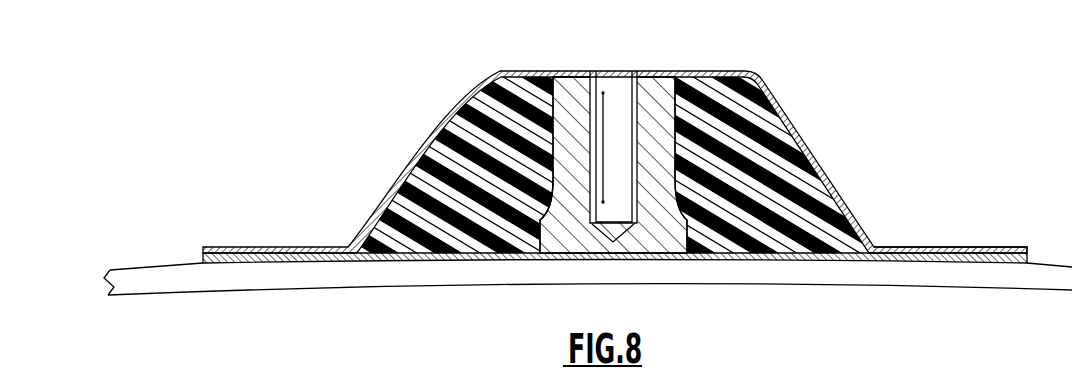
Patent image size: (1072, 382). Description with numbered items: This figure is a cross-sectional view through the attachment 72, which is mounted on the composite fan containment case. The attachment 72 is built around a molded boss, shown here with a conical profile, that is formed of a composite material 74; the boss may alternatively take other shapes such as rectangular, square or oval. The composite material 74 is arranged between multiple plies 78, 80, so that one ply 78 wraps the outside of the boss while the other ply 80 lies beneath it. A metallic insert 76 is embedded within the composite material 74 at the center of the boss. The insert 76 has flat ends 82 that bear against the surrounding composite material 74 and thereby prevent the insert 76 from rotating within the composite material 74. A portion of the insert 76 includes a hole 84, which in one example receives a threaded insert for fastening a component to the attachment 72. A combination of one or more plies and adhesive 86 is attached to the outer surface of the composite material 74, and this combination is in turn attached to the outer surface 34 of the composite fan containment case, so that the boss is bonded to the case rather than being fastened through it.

The outer surface 34 is at (131, 268).
The attachment 72 is at (615, 191).
The composite material 74 is at (450, 223).
The metallic insert 76 is at (573, 101).
The ply 78 is at (275, 247).
The ply 80 is at (272, 263).
The flat end 82 is at (535, 237).
The hole 84 is at (637, 107).
The adhesive 86 is at (923, 250).